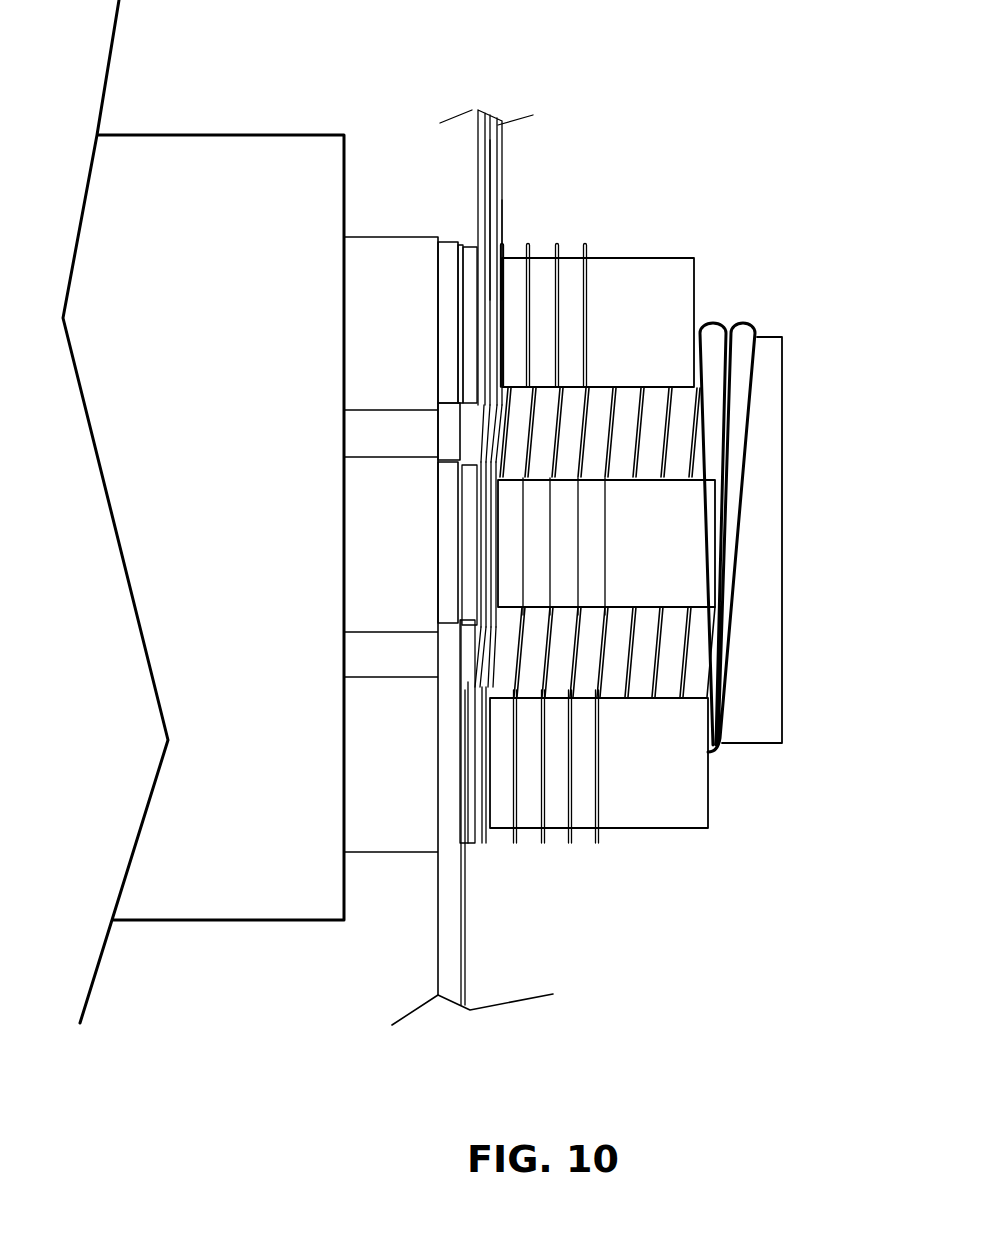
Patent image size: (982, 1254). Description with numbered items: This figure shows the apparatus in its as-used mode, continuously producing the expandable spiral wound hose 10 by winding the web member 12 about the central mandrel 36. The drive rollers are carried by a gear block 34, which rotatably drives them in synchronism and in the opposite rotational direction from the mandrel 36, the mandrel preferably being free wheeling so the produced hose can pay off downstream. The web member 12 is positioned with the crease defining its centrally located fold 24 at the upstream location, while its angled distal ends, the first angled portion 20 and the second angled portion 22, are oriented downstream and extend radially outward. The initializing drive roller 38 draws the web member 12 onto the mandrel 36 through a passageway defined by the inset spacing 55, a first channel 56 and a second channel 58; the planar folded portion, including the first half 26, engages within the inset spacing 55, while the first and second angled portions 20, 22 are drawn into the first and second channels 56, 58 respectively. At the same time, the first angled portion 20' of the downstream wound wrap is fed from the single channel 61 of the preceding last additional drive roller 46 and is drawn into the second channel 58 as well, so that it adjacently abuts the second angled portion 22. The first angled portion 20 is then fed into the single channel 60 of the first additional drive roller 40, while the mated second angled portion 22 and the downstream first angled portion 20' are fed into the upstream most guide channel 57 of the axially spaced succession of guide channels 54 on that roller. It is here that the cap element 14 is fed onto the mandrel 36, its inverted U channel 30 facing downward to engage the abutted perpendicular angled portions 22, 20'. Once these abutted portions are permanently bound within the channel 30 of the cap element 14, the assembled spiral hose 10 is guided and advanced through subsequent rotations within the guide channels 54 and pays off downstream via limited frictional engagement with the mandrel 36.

The hose device 10 is at (765, 316).
The web member 12 is at (452, 995).
The cap element 14 is at (478, 113).
The first distal end 20 is at (367, 616).
The first angled portion of the downstream wound wrap 20' is at (597, 517).
The second distal end 22 is at (487, 425).
The central fold 24 is at (438, 953).
The first half portion 26 is at (448, 438).
The channel 30 is at (492, 183).
The gear block 34 is at (208, 312).
The central mandrel 36 is at (783, 423).
The initializing drive roller 38 is at (712, 522).
The first additional drive roller 40 is at (694, 283).
The last additional drive roller 46 is at (702, 797).
The guide channels 54 is at (562, 258).
The inset spacing 55 is at (438, 240).
The first channel 56 is at (458, 567).
The upstream most guide channel 57 is at (502, 240).
The second channel 58 is at (480, 586).
The single channel 60 is at (458, 356).
The single channel of the last additional roller 61 is at (474, 735).